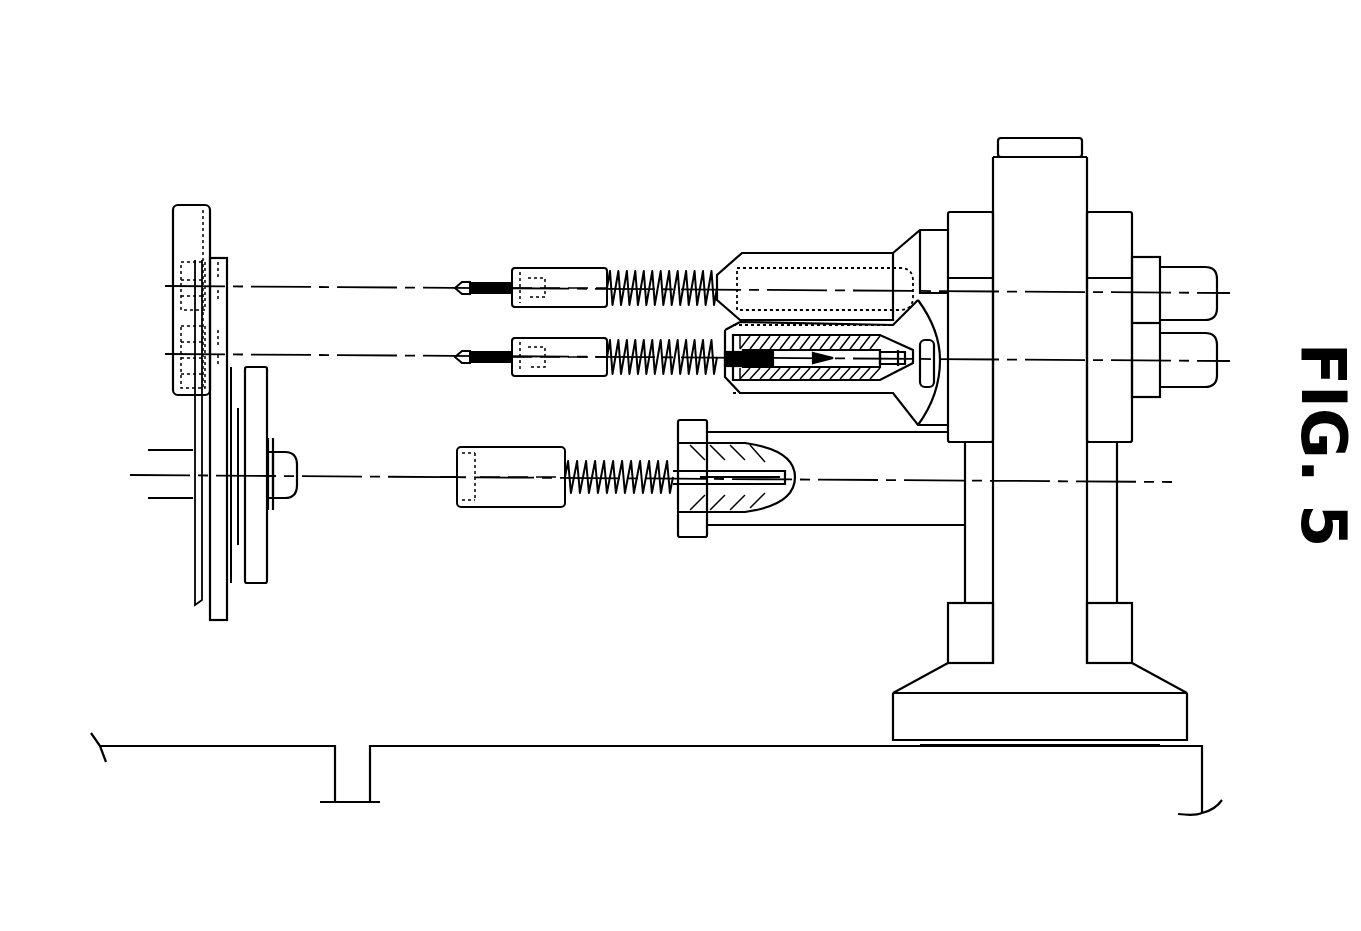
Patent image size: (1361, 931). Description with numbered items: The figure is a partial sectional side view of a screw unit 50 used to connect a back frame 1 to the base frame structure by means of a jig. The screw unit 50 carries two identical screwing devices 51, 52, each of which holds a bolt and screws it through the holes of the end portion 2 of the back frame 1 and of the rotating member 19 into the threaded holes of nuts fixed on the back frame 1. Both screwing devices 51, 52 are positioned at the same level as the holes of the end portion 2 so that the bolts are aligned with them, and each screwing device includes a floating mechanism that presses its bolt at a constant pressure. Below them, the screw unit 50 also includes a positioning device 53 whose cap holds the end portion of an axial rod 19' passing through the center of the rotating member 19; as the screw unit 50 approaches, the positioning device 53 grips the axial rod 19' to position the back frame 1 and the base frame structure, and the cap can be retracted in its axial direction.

The back frame 1 is at (200, 206).
The end portion 2 is at (146, 310).
The rotating member 19 is at (256, 403).
The axial rod 19' is at (311, 479).
The screw unit 50 is at (738, 187).
The screwing device 51 is at (777, 255).
The screwing device 52 is at (853, 328).
The positioning device 53 is at (817, 515).